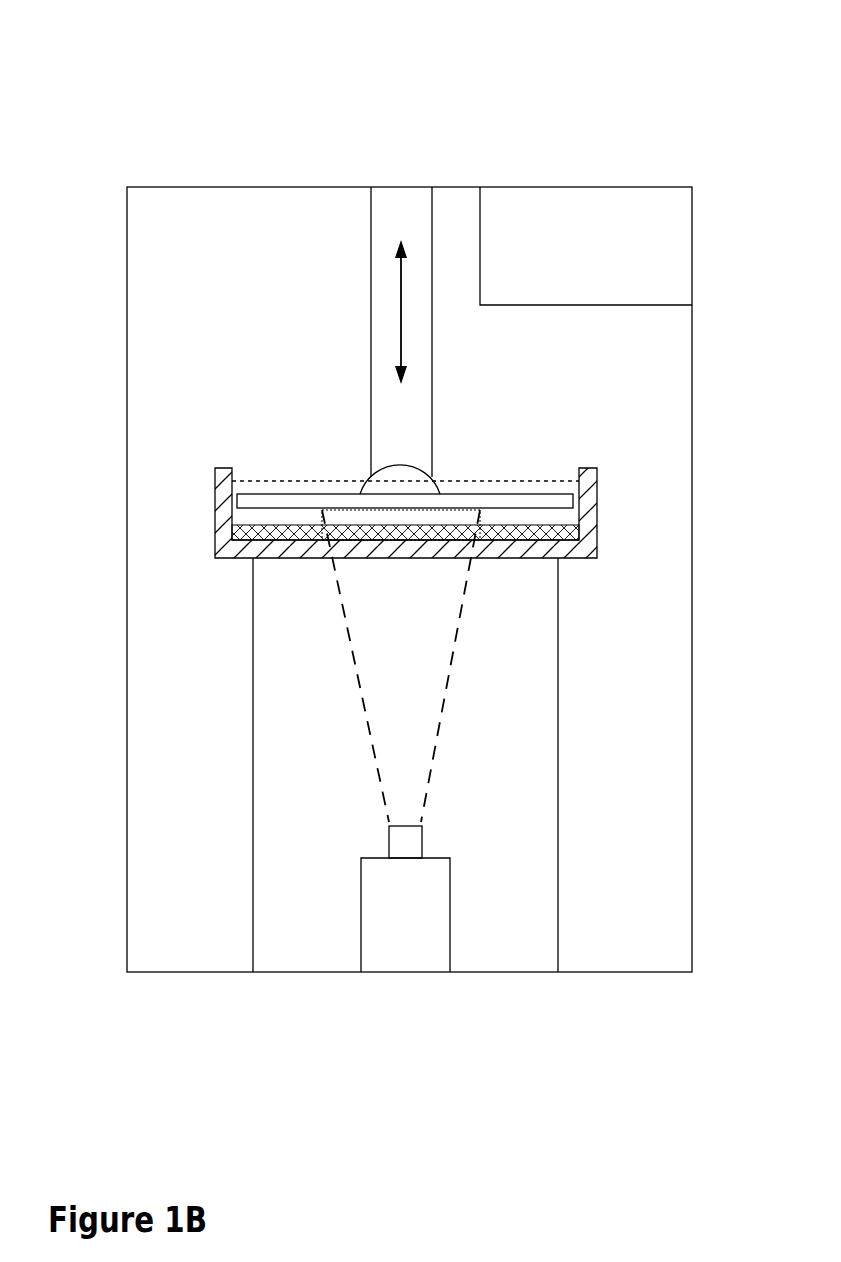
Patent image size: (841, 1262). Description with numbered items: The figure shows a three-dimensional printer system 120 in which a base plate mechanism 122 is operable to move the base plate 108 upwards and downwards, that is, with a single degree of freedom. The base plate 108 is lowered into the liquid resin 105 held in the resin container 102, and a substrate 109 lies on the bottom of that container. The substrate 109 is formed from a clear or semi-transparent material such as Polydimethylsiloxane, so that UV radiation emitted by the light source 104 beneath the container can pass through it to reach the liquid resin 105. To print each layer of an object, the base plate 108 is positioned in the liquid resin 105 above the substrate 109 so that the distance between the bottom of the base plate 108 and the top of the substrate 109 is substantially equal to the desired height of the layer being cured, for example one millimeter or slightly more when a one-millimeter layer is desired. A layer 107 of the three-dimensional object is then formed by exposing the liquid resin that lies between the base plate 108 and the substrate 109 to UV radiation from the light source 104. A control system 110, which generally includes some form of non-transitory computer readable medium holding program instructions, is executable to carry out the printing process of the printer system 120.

The 3D printer system 120 is at (356, 103).
The control system 110 is at (586, 246).
The base plate mechanism 122 is at (370, 333).
The resin container 102 is at (222, 468).
The liquid resin 105 is at (540, 481).
The base plate 108 is at (330, 492).
The layer 107 is at (322, 540).
The substrate 109 is at (545, 557).
The light source 104 is at (375, 858).